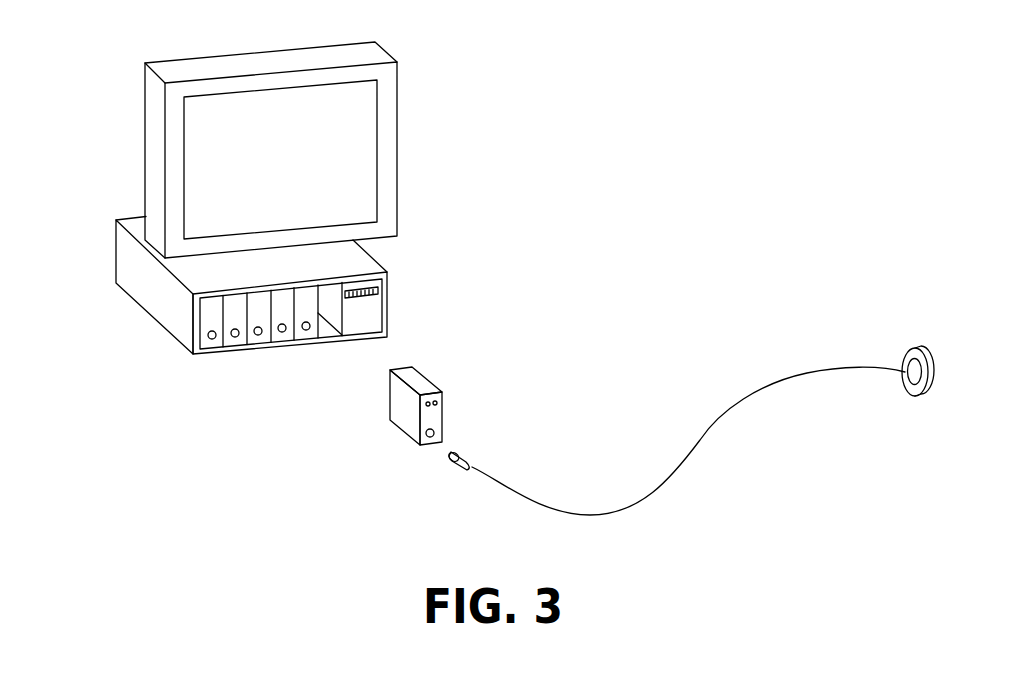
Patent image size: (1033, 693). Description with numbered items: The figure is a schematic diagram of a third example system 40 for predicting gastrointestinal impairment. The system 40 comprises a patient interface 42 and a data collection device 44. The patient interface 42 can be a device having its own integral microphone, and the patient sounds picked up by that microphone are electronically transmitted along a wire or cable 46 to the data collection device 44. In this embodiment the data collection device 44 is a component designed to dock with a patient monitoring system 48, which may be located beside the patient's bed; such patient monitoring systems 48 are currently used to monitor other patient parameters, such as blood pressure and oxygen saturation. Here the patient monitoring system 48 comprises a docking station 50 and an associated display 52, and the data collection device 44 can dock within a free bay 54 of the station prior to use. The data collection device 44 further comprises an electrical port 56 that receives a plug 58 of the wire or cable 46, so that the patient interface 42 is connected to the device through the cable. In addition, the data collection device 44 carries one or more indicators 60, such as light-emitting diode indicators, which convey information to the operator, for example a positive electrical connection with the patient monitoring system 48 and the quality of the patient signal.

The system 40 is at (788, 74).
The patient interface 42 is at (910, 394).
The data collection device 44 is at (415, 383).
The wire or cable 46 is at (667, 483).
The patient monitoring system 48 is at (80, 83).
The docking station 50 is at (388, 308).
The display 52 is at (387, 112).
The free bay 54 is at (328, 329).
The electrical port 56 is at (425, 435).
The plug 58 is at (447, 458).
The indicators 60 is at (440, 400).